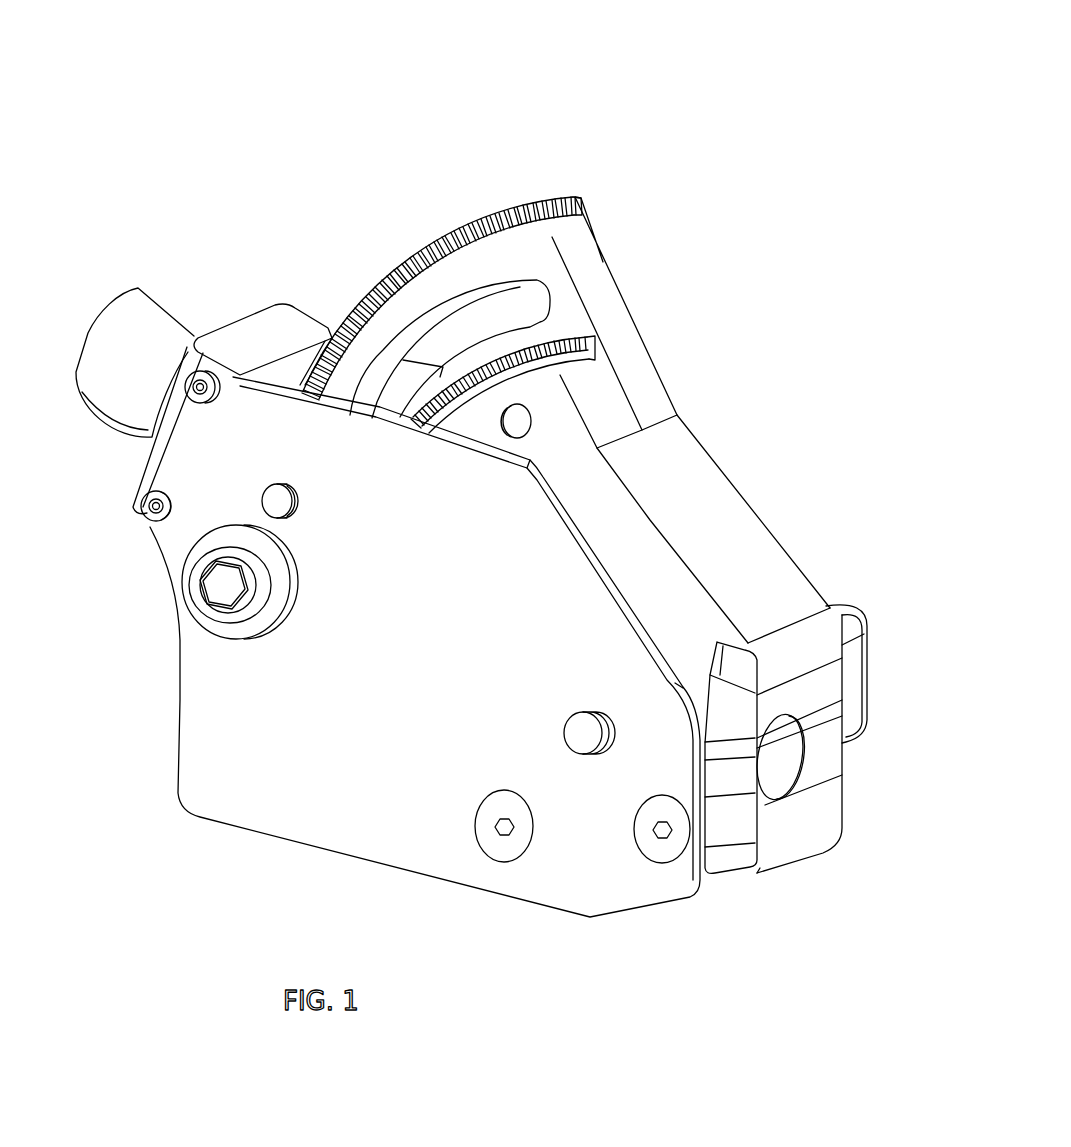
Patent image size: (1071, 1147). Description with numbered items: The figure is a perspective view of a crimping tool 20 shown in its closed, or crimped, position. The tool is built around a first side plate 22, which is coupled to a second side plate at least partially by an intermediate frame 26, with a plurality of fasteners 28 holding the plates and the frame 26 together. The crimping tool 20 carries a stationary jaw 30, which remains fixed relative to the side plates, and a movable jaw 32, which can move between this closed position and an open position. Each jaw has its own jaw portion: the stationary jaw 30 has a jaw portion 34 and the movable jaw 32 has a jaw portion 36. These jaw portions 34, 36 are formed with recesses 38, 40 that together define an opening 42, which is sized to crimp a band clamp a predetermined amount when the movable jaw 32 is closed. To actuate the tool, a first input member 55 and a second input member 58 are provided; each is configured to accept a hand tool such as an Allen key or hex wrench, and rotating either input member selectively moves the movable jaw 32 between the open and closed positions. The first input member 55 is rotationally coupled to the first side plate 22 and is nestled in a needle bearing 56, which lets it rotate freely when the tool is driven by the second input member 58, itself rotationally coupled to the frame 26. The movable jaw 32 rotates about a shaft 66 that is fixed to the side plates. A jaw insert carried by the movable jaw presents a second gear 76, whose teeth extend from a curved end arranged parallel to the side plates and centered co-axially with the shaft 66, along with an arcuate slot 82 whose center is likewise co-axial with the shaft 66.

The crimping tool 20 is at (756, 104).
The first side plate 22 is at (192, 775).
The intermediate frame 26 is at (250, 307).
The fasteners 28 is at (208, 405).
The stationary jaw 30 is at (715, 883).
The movable jaw 32 is at (780, 570).
The jaw portion 34 is at (817, 800).
The jaw portion 36 is at (853, 657).
The recess 38 is at (780, 803).
The recess 40 is at (784, 708).
The opening 42 is at (790, 758).
The first input member 55 is at (218, 590).
The needle bearing 56 is at (272, 620).
The second input member 58 is at (166, 300).
The shaft 66 is at (563, 727).
The second gear 76 is at (427, 214).
The arcuate slot 82 is at (550, 296).